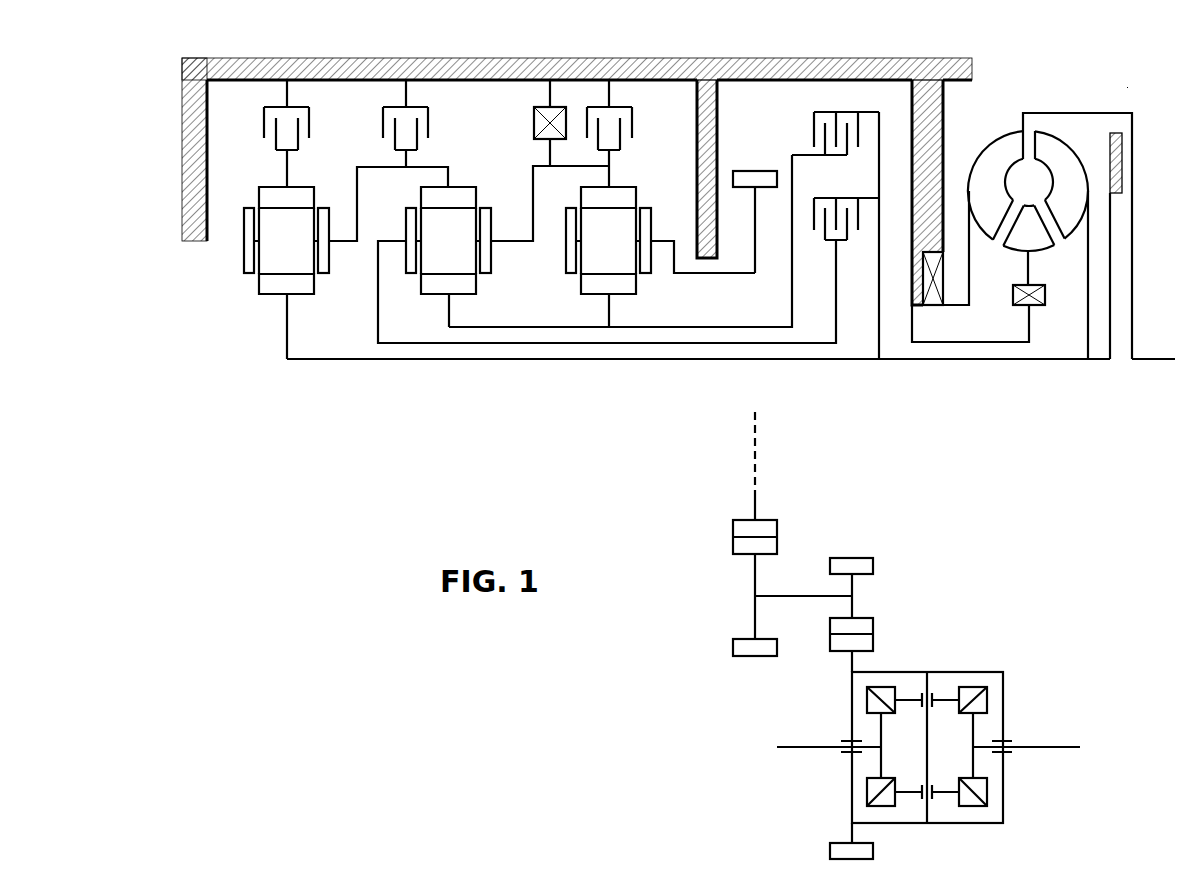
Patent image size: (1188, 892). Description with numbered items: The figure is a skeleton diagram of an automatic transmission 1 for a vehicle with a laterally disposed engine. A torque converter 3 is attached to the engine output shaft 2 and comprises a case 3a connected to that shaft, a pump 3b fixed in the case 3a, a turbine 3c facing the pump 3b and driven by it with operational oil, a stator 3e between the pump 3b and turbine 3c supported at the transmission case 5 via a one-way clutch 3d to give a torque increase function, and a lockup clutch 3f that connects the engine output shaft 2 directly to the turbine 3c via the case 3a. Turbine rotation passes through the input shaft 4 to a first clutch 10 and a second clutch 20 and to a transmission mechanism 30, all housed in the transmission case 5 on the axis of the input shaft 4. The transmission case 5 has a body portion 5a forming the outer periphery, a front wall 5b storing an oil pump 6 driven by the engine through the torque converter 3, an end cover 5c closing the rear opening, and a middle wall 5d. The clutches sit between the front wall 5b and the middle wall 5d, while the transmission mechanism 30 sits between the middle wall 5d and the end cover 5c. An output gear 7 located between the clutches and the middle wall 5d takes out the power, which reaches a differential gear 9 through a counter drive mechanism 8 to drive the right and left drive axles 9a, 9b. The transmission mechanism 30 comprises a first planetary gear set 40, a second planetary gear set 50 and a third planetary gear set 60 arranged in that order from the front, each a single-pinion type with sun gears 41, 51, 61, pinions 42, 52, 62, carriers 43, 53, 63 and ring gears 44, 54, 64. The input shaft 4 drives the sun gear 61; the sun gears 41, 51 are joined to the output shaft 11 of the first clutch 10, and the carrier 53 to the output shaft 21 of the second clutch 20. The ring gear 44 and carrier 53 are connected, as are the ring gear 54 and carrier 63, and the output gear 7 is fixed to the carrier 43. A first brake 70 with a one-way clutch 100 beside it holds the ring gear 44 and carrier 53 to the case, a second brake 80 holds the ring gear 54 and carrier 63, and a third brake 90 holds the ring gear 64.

The automatic transmission 1 is at (1127, 87).
The engine output shaft 2 is at (1145, 357).
The torque converter 3 is at (1094, 108).
The case 3a is at (1053, 111).
The pump 3b is at (983, 146).
The turbine 3c is at (1063, 139).
The one-way clutch 3d is at (1043, 303).
The stator 3e is at (1048, 252).
The lockup clutch 3f is at (1125, 162).
The input shaft 4 is at (928, 361).
The transmission case 5 is at (926, 50).
The body portion 5a is at (868, 62).
The front wall 5b is at (912, 257).
The end cover 5c is at (195, 152).
The middle wall 5d is at (718, 143).
The oil pump 6 is at (933, 305).
The output gear 7 is at (762, 168).
The counter drive mechanism 8 is at (855, 551).
The differential gear 9 is at (957, 660).
The drive axle 9a is at (793, 748).
The drive axle 9b is at (1055, 748).
The first clutch 10 is at (832, 157).
The output shaft of the first clutch 11 is at (791, 255).
The second clutch 20 is at (842, 242).
The output shaft of the second clutch 21 is at (835, 268).
The transmission mechanism 30 is at (645, 92).
The first planetary gear set 40 is at (634, 181).
The sun gear 41 is at (596, 295).
The pinion 42 is at (598, 260).
The carrier 43 is at (566, 248).
The ring gear 44 is at (582, 198).
The second planetary gear set 50 is at (464, 181).
The sun gear 51 is at (434, 292).
The pinion 52 is at (432, 258).
The carrier 53 is at (405, 258).
The ring gear 54 is at (421, 198).
The third planetary gear set 60 is at (313, 181).
The sun gear 61 is at (279, 287).
The pinion 62 is at (271, 252).
The carrier 63 is at (245, 248).
The ring gear 64 is at (258, 196).
The first brake 70 is at (634, 123).
The second brake 80 is at (429, 122).
The third brake 90 is at (311, 122).
The one-way clutch 100 is at (534, 120).